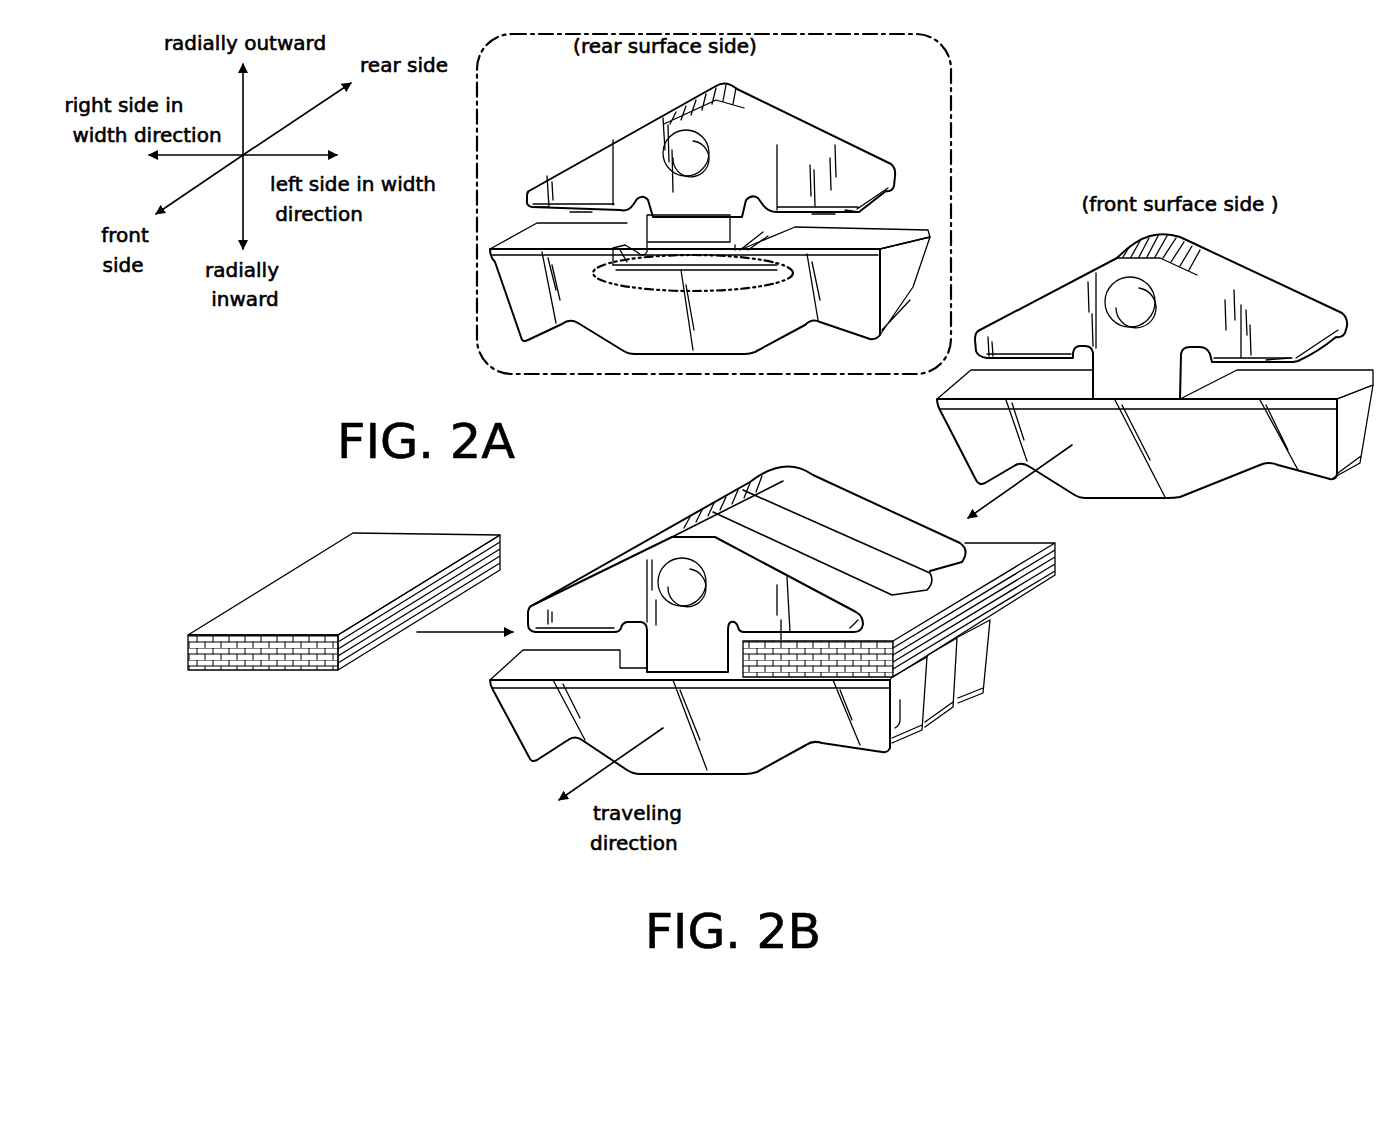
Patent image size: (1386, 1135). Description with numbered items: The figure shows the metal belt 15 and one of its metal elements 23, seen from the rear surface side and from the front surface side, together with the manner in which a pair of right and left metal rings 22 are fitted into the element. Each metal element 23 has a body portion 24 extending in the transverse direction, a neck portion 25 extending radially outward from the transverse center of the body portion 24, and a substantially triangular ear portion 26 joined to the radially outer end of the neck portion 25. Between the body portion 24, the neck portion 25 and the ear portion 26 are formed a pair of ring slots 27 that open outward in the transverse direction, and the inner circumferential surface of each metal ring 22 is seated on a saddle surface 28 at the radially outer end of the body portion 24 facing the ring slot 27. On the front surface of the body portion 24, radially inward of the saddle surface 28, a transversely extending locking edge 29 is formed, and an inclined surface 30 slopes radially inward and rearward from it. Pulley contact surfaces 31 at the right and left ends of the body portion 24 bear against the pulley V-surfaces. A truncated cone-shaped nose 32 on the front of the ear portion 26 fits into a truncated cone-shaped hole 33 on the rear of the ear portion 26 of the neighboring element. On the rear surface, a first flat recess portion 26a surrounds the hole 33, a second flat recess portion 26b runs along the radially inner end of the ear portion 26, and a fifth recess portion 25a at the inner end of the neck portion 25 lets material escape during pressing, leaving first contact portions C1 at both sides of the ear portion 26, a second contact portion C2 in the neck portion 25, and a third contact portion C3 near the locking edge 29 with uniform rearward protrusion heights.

In FIG. 2B, the metal belt 15 is at (616, 505).
In FIG. 2B, the metal ring 22 is at (266, 580).
In FIG. 2A, the metal element 23 is at (797, 100).
In FIG. 2B, the metal element 23 is at (1288, 252).
In FIG. 2A, the body portion 24 is at (681, 315).
In FIG. 2B, the body portion 24 is at (909, 634).
In FIG. 2A, the neck portion 25 is at (748, 232).
In FIG. 2B, the neck portion 25 is at (1155, 370).
In FIG. 2A, the fifth recess portion 25a is at (687, 248).
In FIG. 2A, the ear portion 26 is at (705, 168).
In FIG. 2B, the ear portion 26 is at (937, 426).
In FIG. 2A, the first flat recess portion 26a is at (750, 165).
In FIG. 2A, the second flat recess portion 26b is at (595, 210).
In FIG. 2A, the ring slot 27 is at (580, 216).
In FIG. 2B, the ring slot 27 is at (1030, 360).
In FIG. 2A, the saddle surface 28 is at (533, 235).
In FIG. 2B, the saddle surface 28 is at (971, 383).
In FIG. 2B, the locking edge 29 is at (1106, 410).
In FIG. 2B, the inclined surface 30 is at (1258, 464).
In FIG. 2A, the pulley contact surface 31 is at (902, 293).
In FIG. 2B, the pulley contact surface 31 is at (1352, 450).
In FIG. 2B, the nose 32 is at (1132, 305).
In FIG. 2A, the hole 33 is at (683, 148).
In FIG. 2A, the first contact portion C1 is at (587, 163).
In FIG. 2A, the second contact portion C2 is at (700, 227).
In FIG. 2A, the third contact portion C3 is at (717, 294).